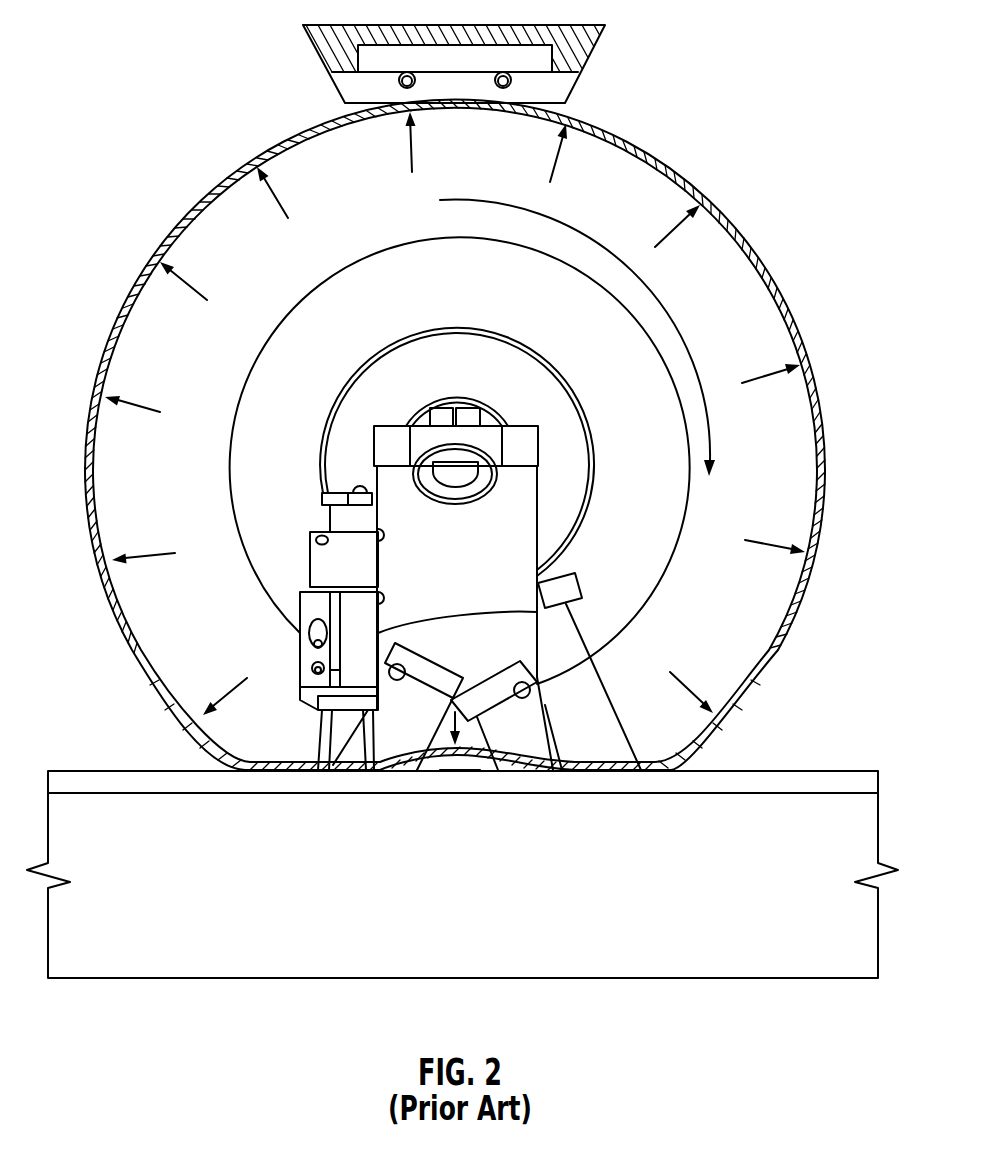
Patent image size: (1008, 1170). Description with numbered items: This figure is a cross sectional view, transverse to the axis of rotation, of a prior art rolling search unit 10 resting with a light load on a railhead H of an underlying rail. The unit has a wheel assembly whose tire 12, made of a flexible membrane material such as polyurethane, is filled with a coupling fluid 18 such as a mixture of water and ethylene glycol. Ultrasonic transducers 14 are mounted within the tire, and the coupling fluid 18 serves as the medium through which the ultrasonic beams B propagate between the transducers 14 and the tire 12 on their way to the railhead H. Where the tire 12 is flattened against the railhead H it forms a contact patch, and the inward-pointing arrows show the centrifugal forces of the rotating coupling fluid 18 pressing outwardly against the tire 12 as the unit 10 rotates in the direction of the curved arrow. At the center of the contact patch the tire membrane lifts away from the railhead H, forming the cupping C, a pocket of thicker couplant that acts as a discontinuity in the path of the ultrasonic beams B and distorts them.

The rolling search unit 10 is at (141, 93).
The tire 12 is at (684, 172).
The ultrasonic transducers 14 is at (492, 690).
The coupling fluid 18 is at (212, 240).
The ultrasonic beams B is at (333, 753).
The cupping C is at (477, 761).
The railhead H is at (833, 780).